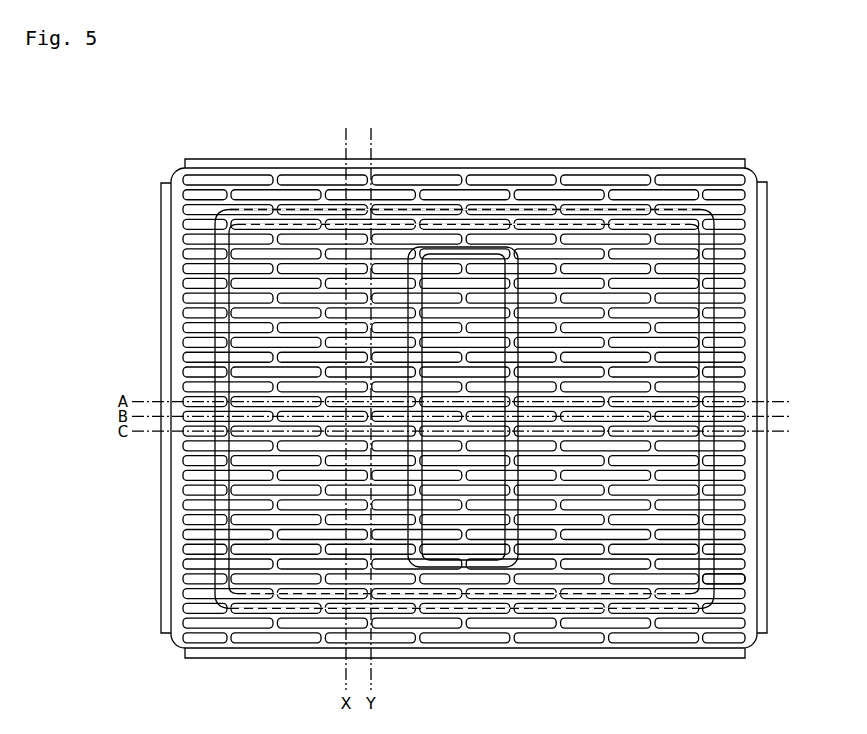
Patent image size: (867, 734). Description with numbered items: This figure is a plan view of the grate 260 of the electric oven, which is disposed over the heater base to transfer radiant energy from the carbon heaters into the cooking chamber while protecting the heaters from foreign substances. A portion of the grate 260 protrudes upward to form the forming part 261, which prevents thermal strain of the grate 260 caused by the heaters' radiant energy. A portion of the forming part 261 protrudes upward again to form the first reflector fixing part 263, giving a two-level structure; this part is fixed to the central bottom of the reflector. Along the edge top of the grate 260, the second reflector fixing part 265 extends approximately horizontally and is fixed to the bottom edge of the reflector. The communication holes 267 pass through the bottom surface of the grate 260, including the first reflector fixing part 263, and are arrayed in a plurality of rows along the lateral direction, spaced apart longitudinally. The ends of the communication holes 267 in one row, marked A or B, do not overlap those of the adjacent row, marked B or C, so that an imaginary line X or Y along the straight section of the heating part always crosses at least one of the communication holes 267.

The grate 260 is at (497, 374).
The forming part 261 is at (635, 258).
The first reflector fixing part 263 is at (463, 283).
The second reflector fixing part 265 is at (765, 472).
The communication holes 267 is at (742, 579).